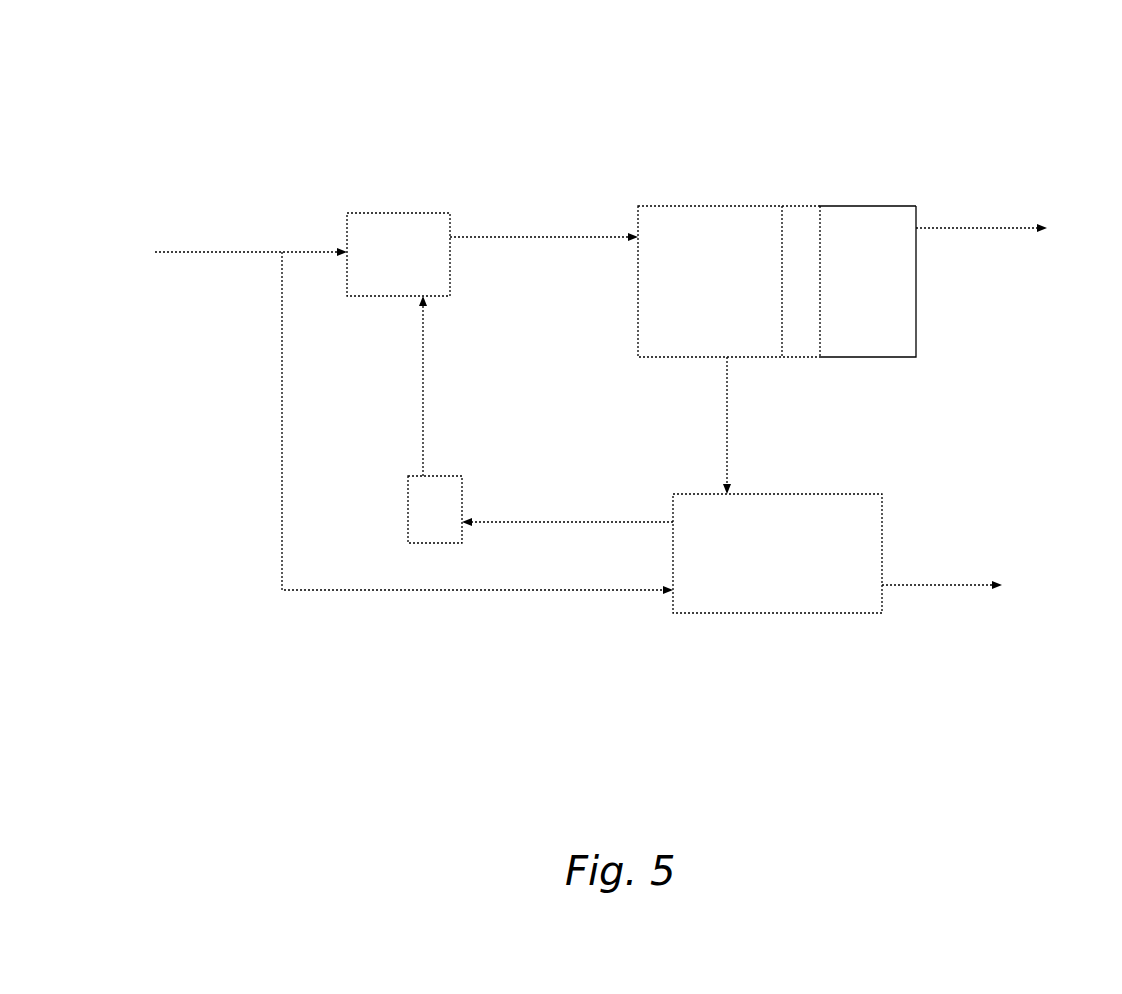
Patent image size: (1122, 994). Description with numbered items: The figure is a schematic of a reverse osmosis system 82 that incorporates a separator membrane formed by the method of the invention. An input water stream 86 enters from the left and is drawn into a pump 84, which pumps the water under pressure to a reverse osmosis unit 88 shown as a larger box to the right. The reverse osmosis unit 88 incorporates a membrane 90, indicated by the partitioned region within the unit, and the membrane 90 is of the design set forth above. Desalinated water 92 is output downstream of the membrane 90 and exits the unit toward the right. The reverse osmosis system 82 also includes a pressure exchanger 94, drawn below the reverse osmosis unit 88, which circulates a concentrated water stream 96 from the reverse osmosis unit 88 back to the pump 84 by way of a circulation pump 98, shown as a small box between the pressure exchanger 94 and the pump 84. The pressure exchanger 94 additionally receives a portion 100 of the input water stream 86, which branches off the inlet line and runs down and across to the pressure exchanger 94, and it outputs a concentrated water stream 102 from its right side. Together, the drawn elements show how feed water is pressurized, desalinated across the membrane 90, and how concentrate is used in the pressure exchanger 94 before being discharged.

The reverse osmosis system 82 is at (964, 106).
The pump 84 is at (377, 213).
The input water stream 86 is at (250, 250).
The reverse osmosis unit 88 is at (706, 193).
The membrane 90 is at (903, 278).
The desalinated water 92 is at (977, 228).
The pressure exchanger 94 is at (882, 510).
The concentrated water stream 96 is at (727, 418).
The circulation pump 98 is at (462, 476).
The portion of water stream 100 is at (282, 512).
The concentrated water stream 102 is at (930, 585).